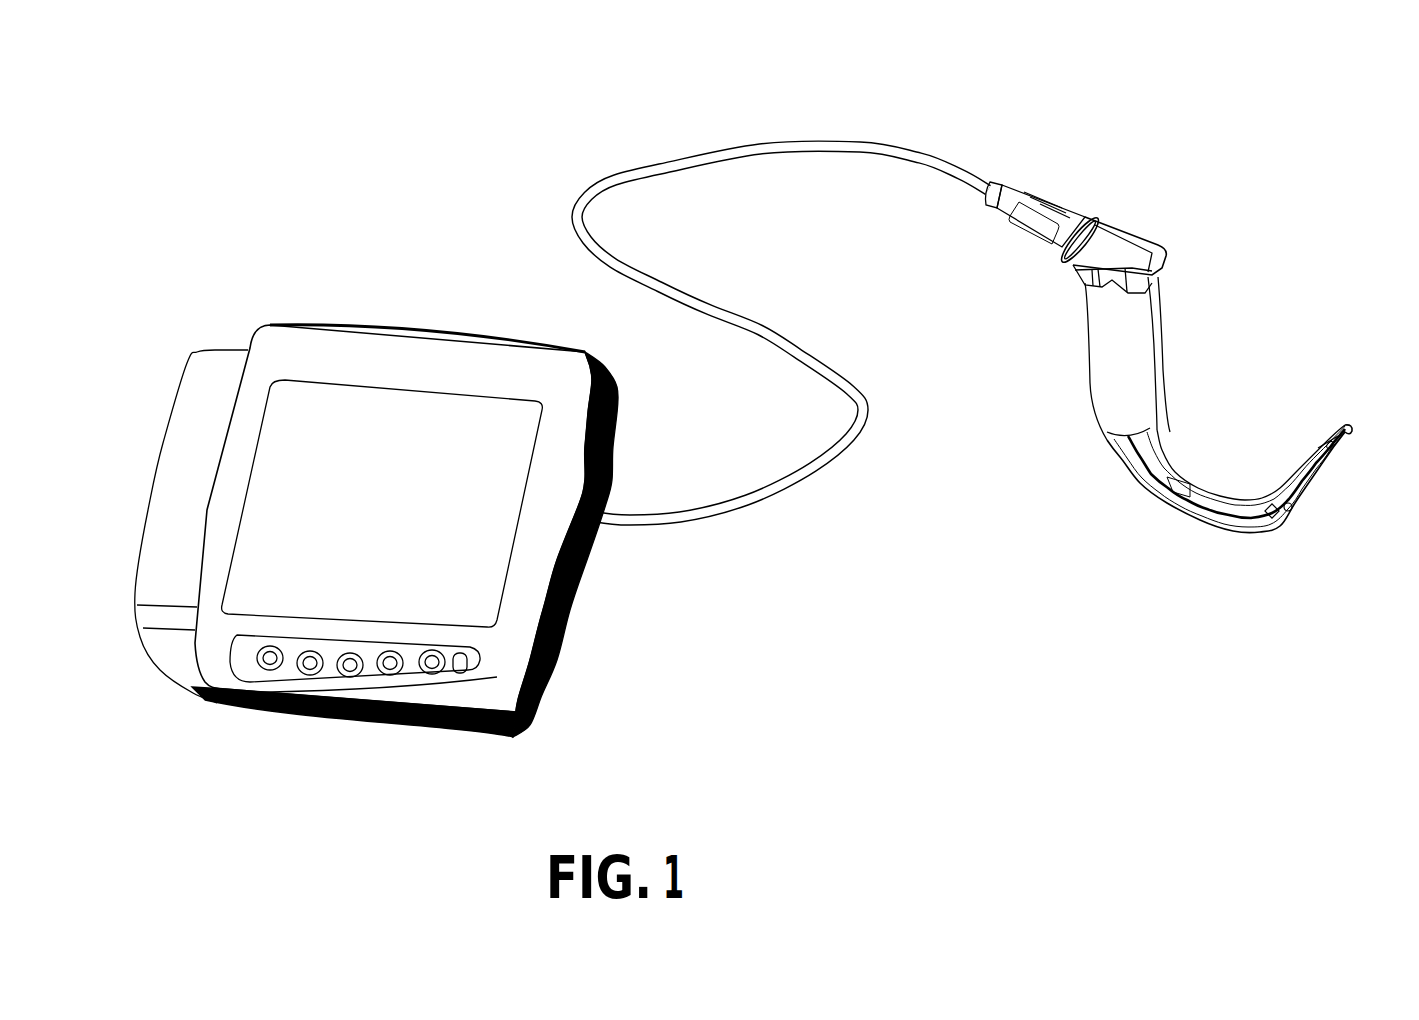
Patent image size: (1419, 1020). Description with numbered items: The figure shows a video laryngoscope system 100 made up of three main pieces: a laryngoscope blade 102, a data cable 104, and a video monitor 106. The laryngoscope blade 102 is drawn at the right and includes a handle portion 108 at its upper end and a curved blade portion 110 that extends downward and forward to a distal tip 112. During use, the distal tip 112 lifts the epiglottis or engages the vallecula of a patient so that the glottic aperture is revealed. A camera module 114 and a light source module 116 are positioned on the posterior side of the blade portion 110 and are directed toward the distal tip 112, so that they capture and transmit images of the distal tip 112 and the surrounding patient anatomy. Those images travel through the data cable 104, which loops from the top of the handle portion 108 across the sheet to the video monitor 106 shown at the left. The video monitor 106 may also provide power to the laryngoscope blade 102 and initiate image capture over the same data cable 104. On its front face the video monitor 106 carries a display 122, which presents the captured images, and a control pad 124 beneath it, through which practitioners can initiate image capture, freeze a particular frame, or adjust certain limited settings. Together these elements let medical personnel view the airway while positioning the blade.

The video laryngoscope system 100 is at (380, 118).
The laryngoscope blade 102 is at (1263, 276).
The data cable 104 is at (922, 160).
The video monitor 106 is at (275, 343).
The handle portion 108 is at (1150, 340).
The blade portion 110 is at (1258, 497).
The distal tip 112 is at (1350, 437).
The camera module 114 is at (1272, 513).
The light source module 116 is at (1287, 513).
The display 122 is at (447, 511).
The control pad 124 is at (292, 675).